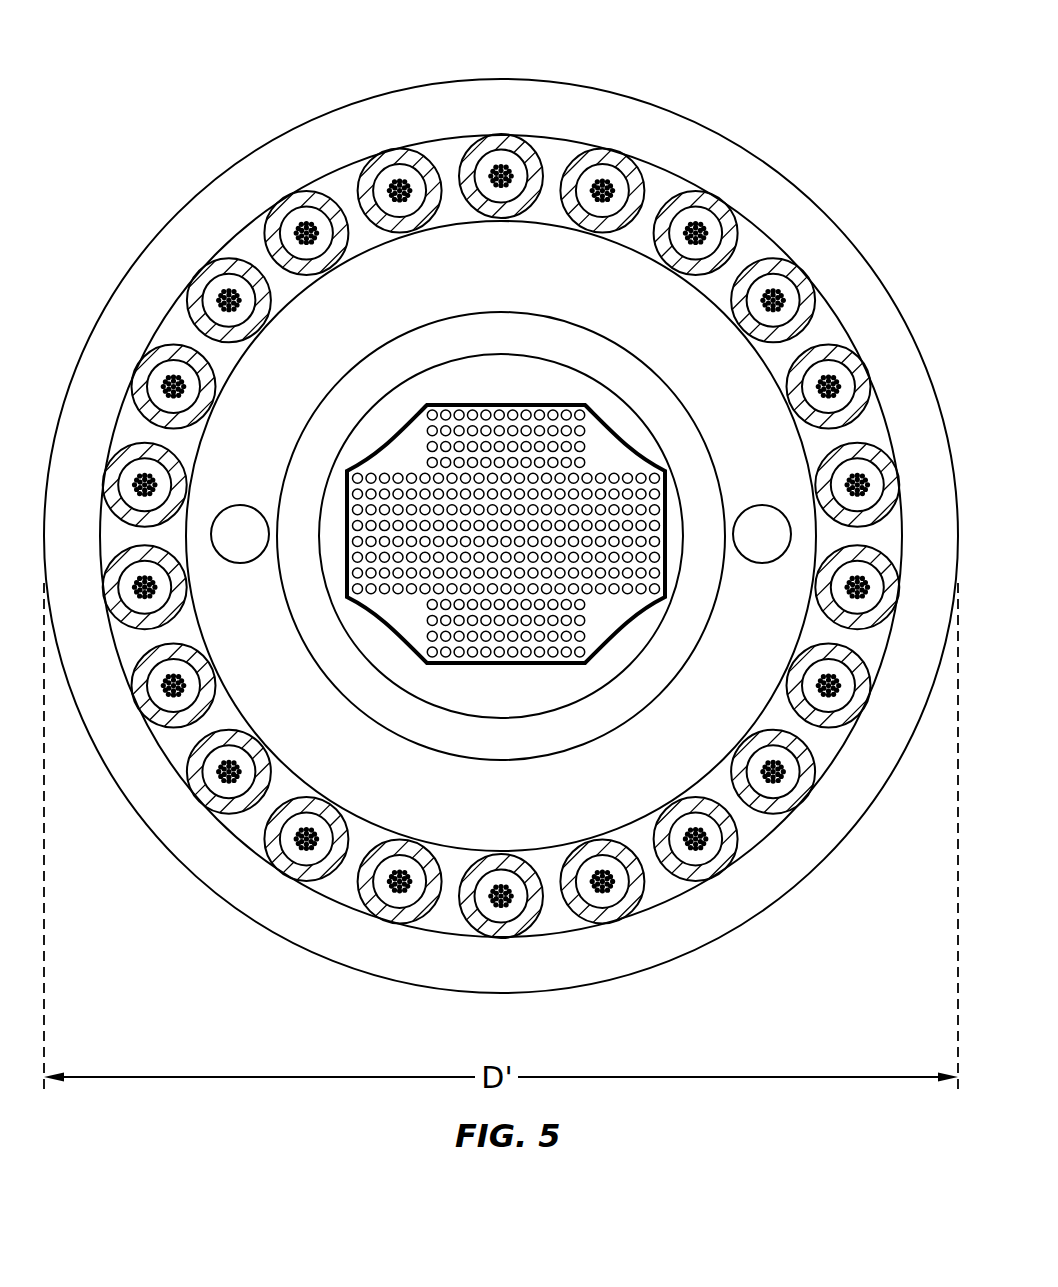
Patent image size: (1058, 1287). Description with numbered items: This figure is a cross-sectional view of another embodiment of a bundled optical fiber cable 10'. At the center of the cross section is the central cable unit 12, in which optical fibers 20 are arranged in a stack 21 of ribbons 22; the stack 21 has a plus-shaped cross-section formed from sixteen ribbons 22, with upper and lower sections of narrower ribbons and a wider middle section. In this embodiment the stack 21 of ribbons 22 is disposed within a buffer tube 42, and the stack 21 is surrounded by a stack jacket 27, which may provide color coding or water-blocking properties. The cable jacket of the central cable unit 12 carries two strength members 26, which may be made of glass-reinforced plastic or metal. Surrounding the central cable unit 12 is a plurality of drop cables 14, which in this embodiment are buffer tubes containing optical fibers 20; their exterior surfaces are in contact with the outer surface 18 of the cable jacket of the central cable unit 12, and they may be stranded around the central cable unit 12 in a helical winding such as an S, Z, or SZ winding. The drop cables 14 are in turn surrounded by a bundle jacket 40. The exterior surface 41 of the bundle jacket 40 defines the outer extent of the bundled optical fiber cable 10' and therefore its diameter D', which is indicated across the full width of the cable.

The bundled optical fiber cable 10' is at (145, 106).
The central cable unit 12 is at (549, 864).
The drop cables 14 is at (788, 380).
The outer surface of the cable jacket 18 is at (765, 710).
The optical fibers 20 is at (473, 655).
The stack 21 is at (476, 371).
The ribbons 22 is at (596, 634).
The strength members 26 is at (752, 528).
The stack jacket 27 is at (383, 620).
The bundle jacket 40 is at (900, 360).
The exterior surface 41 is at (122, 280).
The buffer tube 42 is at (420, 720).